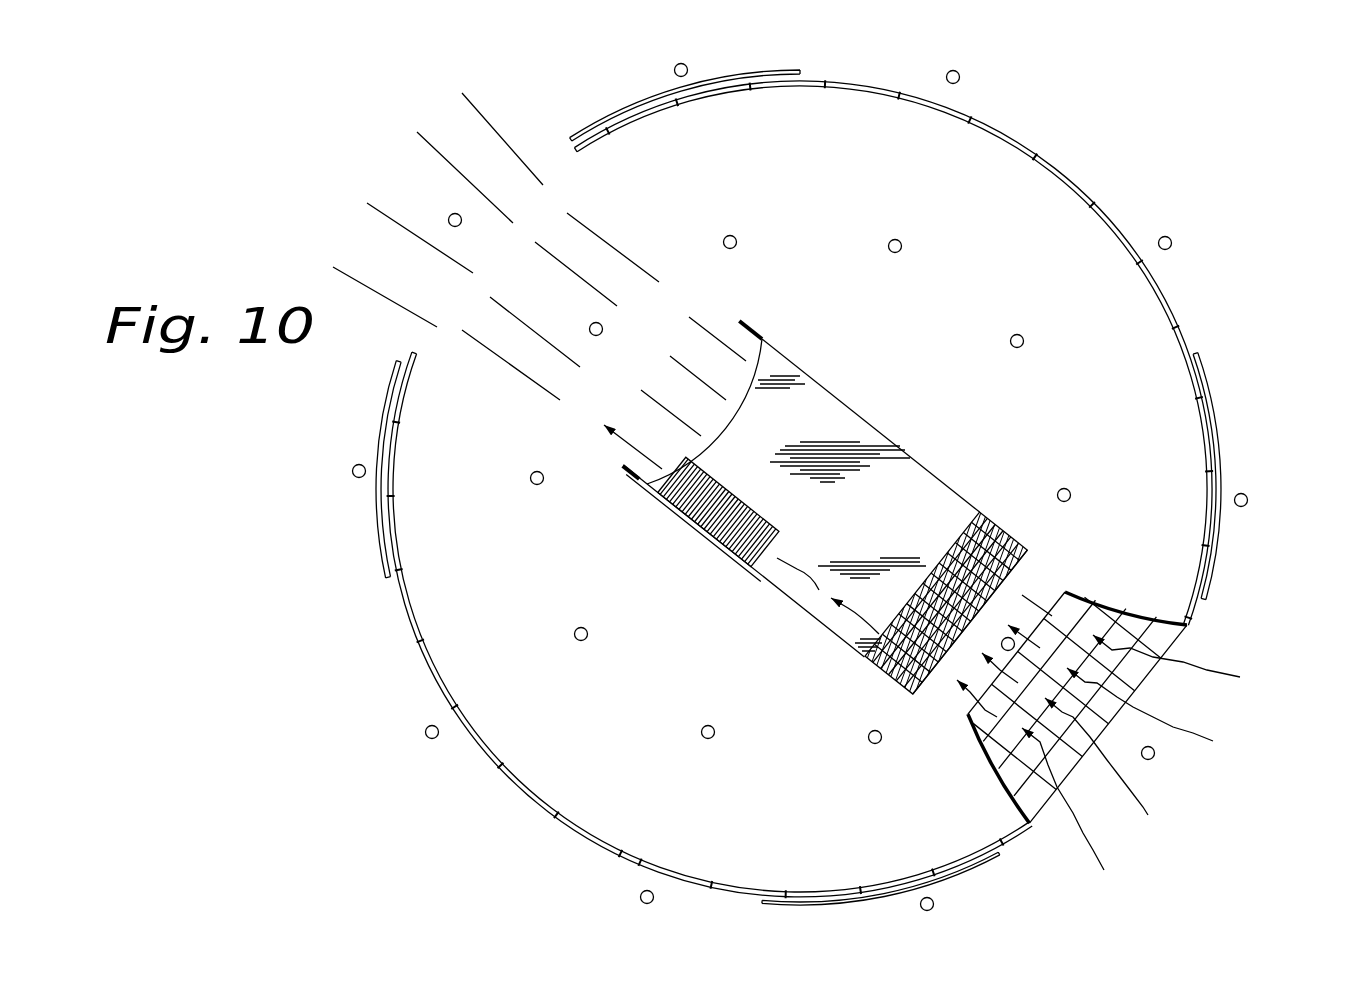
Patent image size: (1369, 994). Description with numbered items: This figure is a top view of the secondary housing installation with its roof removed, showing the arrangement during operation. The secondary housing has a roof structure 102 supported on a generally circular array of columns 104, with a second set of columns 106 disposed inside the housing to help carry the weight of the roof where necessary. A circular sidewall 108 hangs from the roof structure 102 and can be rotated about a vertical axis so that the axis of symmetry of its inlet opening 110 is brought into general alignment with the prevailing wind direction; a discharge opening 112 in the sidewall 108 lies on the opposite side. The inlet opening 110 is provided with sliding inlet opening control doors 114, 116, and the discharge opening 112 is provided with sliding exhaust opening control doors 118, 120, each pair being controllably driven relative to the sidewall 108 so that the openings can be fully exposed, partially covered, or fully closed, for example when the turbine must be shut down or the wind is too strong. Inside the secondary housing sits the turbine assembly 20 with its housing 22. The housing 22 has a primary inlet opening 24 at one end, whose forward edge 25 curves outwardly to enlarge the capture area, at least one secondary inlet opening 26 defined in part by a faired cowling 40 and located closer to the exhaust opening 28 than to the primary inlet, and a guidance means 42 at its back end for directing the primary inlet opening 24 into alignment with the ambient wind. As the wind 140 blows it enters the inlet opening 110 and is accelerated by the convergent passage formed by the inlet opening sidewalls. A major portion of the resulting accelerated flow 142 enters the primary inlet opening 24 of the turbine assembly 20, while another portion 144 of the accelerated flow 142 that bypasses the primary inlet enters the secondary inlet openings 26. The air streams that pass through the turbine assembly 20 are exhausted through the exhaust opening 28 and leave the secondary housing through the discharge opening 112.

The turbine assembly 20 is at (843, 531).
The housing 22 is at (905, 470).
The primary inlet opening 24 is at (933, 640).
The forward edge 25 is at (1028, 560).
The secondary inlet opening 26 is at (762, 560).
The exhaust opening 28 is at (782, 350).
The cowling 40 is at (713, 533).
The guidance means 42 is at (628, 482).
The roof structure 102 is at (800, 484).
The columns 104 is at (960, 77).
The second set of columns 106 is at (1024, 336).
The sidewall 108 is at (1010, 137).
The inlet opening 110 is at (1056, 683).
The discharge opening 112 is at (562, 172).
The inlet opening control door 114 is at (970, 875).
The inlet opening control door 116 is at (1224, 452).
The exhaust opening control door 118 is at (385, 415).
The exhaust opening control door 120 is at (632, 107).
The wind 140 is at (1212, 672).
The accelerated flow 142 is at (968, 690).
The bypass portion of accelerated flow 144 is at (797, 572).